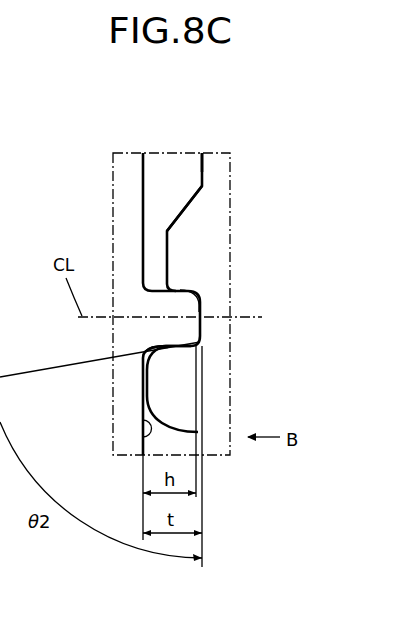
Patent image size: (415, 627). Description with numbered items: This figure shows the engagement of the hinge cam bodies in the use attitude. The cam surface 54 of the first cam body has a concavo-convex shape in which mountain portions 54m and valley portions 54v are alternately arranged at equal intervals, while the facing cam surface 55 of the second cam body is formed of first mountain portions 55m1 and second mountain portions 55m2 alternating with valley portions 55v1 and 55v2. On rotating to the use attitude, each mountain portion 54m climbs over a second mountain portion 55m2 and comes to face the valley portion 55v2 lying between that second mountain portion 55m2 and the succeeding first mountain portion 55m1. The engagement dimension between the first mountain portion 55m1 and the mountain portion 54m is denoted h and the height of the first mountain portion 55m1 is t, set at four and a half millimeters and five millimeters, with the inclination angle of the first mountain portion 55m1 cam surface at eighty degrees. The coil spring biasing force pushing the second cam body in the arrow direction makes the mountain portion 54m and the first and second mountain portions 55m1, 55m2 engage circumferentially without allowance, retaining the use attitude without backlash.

The cam surface 54 is at (144, 181).
The cam surface 55 is at (200, 181).
The valley portion 55v1 is at (199, 165).
The second mountain portion 55m2 is at (173, 254).
The valley portion 55v2 is at (184, 291).
The first mountain portion 55m1 is at (157, 379).
The mountain portion 54m is at (168, 328).
The valley portion 54v is at (143, 435).